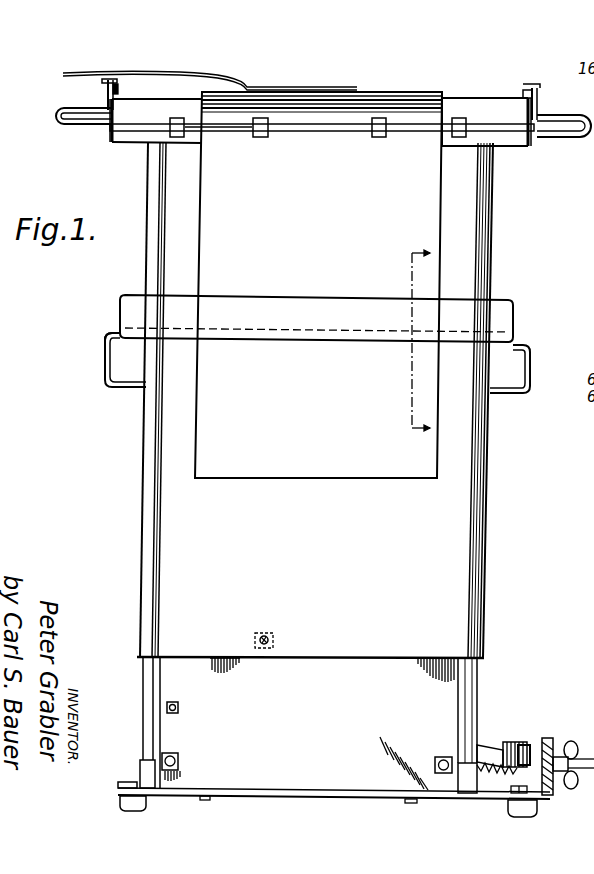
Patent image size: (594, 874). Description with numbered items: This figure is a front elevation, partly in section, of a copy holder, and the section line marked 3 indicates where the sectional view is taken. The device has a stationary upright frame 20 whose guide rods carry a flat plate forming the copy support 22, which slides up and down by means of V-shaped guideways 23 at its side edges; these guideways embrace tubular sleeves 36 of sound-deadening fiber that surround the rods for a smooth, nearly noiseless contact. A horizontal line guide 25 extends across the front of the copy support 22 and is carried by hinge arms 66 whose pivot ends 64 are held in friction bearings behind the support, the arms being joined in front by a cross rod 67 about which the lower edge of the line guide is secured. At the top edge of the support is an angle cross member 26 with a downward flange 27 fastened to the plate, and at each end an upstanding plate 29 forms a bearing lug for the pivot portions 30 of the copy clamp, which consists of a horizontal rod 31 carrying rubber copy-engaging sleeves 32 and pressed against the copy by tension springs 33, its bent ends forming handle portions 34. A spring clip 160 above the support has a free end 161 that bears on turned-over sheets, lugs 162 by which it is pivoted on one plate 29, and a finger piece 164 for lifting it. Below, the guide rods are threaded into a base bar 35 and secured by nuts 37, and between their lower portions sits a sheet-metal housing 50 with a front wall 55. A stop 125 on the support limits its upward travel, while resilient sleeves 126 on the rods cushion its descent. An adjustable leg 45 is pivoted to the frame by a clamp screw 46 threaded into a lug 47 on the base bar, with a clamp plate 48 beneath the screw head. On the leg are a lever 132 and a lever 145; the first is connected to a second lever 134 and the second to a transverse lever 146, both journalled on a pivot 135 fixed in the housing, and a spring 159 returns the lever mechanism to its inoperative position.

The stationary upright frame 20 is at (153, 680).
The copy support 22 is at (318, 303).
The guideways 23 is at (143, 515).
The line guide 25 is at (316, 318).
The cross member 26 is at (458, 110).
The flange 27 is at (408, 98).
The plate 29 is at (114, 98).
The pivot portions 30 is at (116, 84).
The horizontal rod 31 is at (233, 129).
The copy-engaging sleeves 32 is at (373, 138).
The tension springs 33 is at (102, 121).
The handle portions 34 is at (57, 125).
The base bar 35 is at (315, 788).
The tubular sleeves 36 is at (153, 680).
The nuts 37 is at (150, 803).
The adjustable leg 45 is at (548, 740).
The clamp screw 46 is at (572, 758).
The lug 47 is at (541, 737).
The clamp plate 48 is at (573, 786).
The housing 50 is at (198, 661).
The front wall 55 is at (312, 711).
The pivot ends 64 is at (133, 388).
The hinge arms 66 is at (108, 357).
The cross rod 67 is at (115, 327).
The stop 125 is at (275, 640).
The resilient sleeves 126 is at (180, 770).
The lever 132 is at (508, 748).
The second lever 134 is at (477, 752).
The pivot 135 is at (180, 707).
The lever 145 is at (525, 768).
The transverse lever 146 is at (515, 742).
The spring 159 is at (506, 781).
The spring clip 160 is at (234, 85).
The free end 161 is at (315, 90).
The lugs 162 is at (102, 84).
The finger piece 164 is at (102, 80).
The section line 3- 3 is at (412, 347).